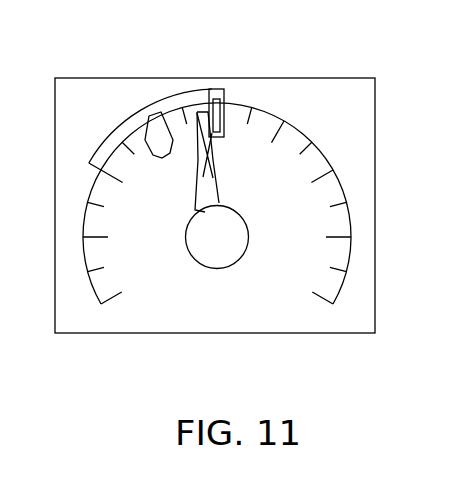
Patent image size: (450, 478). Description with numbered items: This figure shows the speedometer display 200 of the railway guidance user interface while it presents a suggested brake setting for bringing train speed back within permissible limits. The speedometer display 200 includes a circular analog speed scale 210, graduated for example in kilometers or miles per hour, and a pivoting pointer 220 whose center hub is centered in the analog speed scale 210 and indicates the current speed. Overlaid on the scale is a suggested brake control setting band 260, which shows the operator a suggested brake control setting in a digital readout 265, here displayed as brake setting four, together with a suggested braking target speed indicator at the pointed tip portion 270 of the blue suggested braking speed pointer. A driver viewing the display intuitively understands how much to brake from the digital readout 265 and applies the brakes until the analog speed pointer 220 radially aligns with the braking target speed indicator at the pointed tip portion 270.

The speedometer display 200 is at (393, 188).
The circular analog speed scale 210 is at (118, 296).
The pivoting pointer 220 is at (229, 139).
The suggested brake control setting band 260 is at (162, 158).
The digital readout 265 is at (127, 118).
The pointed tip portion 270 is at (170, 152).